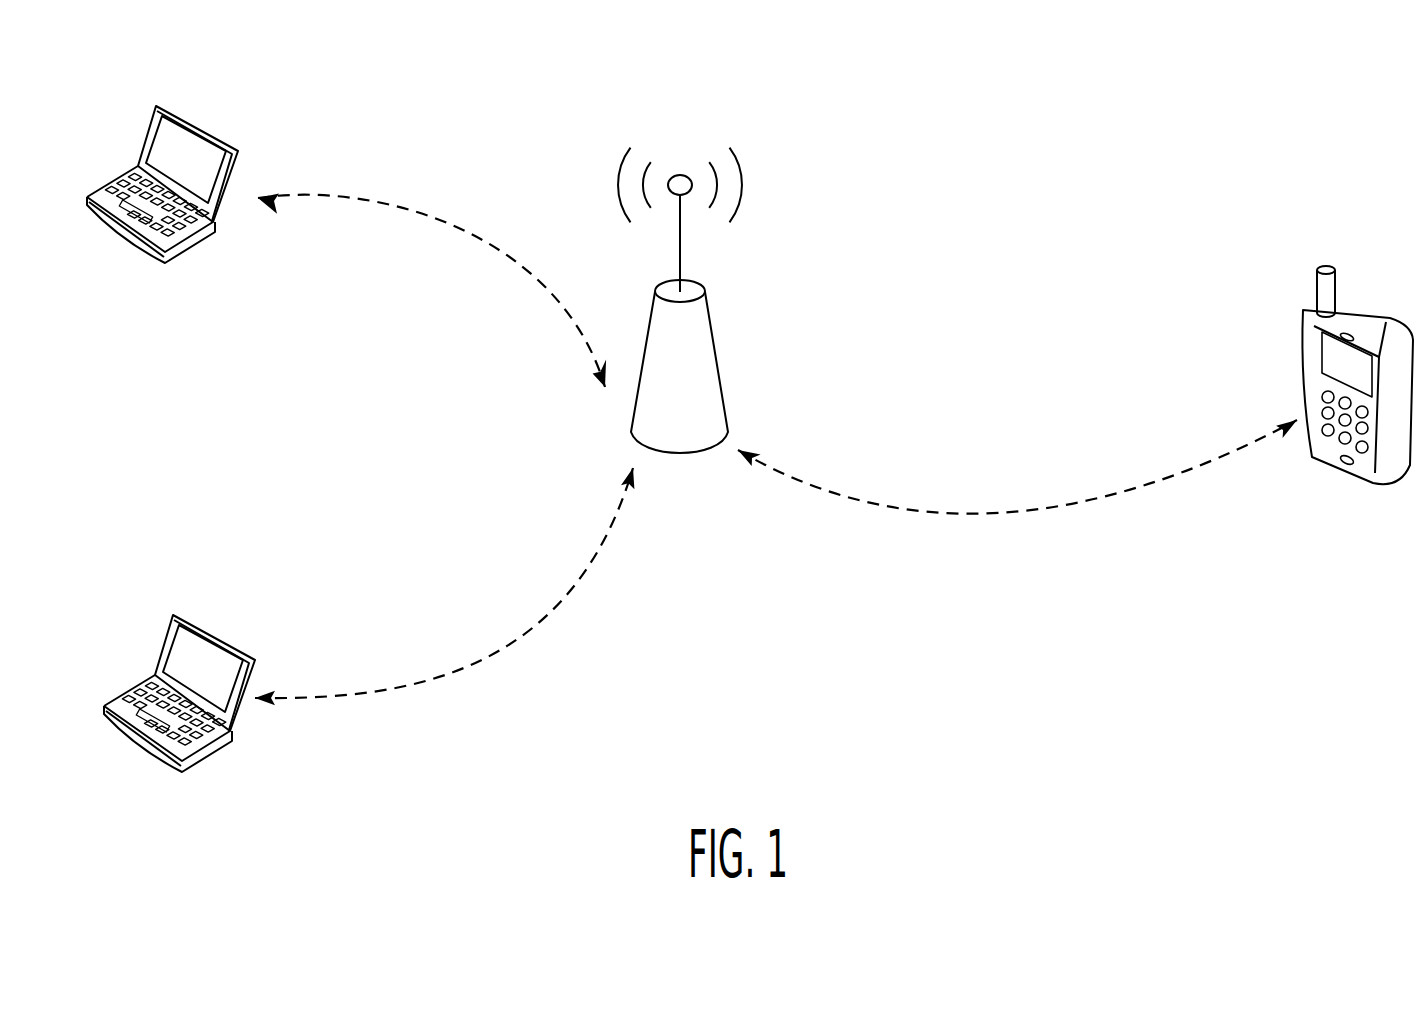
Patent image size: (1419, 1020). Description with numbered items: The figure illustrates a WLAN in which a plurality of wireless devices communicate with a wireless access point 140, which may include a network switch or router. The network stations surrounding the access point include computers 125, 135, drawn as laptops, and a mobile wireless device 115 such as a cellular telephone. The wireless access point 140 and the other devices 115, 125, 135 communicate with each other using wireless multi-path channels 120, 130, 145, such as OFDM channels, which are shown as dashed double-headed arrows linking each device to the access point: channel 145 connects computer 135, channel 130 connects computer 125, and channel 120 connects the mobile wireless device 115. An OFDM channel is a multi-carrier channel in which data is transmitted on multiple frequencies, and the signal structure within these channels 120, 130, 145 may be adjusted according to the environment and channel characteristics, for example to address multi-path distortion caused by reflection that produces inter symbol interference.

The mobile wireless device 115 is at (1381, 532).
The wireless multi-path channel 120 is at (997, 513).
The computer 125 is at (190, 800).
The wireless multi-path channel 130 is at (470, 665).
The computer 135 is at (192, 300).
The wireless access point 140 is at (705, 497).
The wireless multi-path channel 145 is at (498, 248).